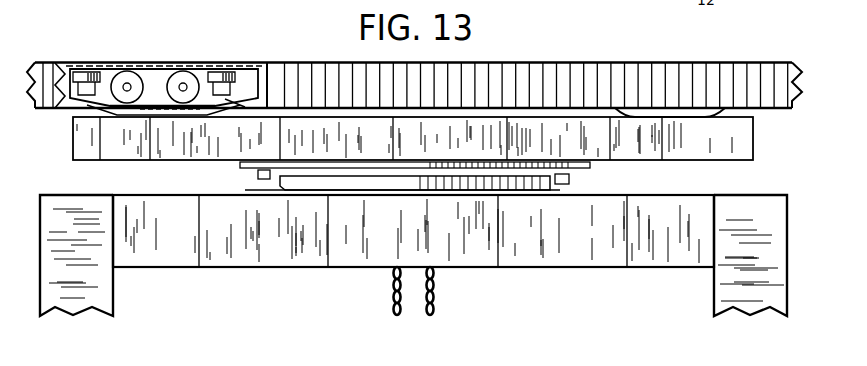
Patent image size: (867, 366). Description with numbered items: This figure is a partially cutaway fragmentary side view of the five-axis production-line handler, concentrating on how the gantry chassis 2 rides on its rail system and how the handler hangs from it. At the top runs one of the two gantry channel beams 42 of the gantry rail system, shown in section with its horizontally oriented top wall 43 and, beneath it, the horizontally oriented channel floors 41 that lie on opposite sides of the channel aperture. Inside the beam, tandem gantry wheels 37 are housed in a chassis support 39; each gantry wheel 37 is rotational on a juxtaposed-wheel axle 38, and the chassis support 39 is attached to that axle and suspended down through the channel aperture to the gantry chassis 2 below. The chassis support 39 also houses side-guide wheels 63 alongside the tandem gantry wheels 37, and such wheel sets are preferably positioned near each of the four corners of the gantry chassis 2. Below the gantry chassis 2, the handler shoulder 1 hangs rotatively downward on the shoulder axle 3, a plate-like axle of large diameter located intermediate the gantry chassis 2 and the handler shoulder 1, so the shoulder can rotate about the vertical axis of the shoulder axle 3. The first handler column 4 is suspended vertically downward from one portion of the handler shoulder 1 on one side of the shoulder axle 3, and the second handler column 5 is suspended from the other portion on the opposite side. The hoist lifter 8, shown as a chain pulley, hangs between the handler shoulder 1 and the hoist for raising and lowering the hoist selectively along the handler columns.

The handler shoulder 1 is at (213, 225).
The gantry chassis 2 is at (272, 140).
The shoulder axle 3 is at (303, 180).
The first handler column 4 is at (85, 270).
The second handler column 5 is at (745, 268).
The hoist lifter 8 is at (393, 310).
The gantry wheels 37 is at (143, 68).
The juxtaposed-wheel axle 38 is at (125, 93).
The chassis supports 39 is at (181, 92).
The channel floors 41 is at (235, 101).
The gantry channel beams 42 is at (297, 82).
The top wall 43 is at (205, 68).
The side-guide wheels 63 is at (88, 72).